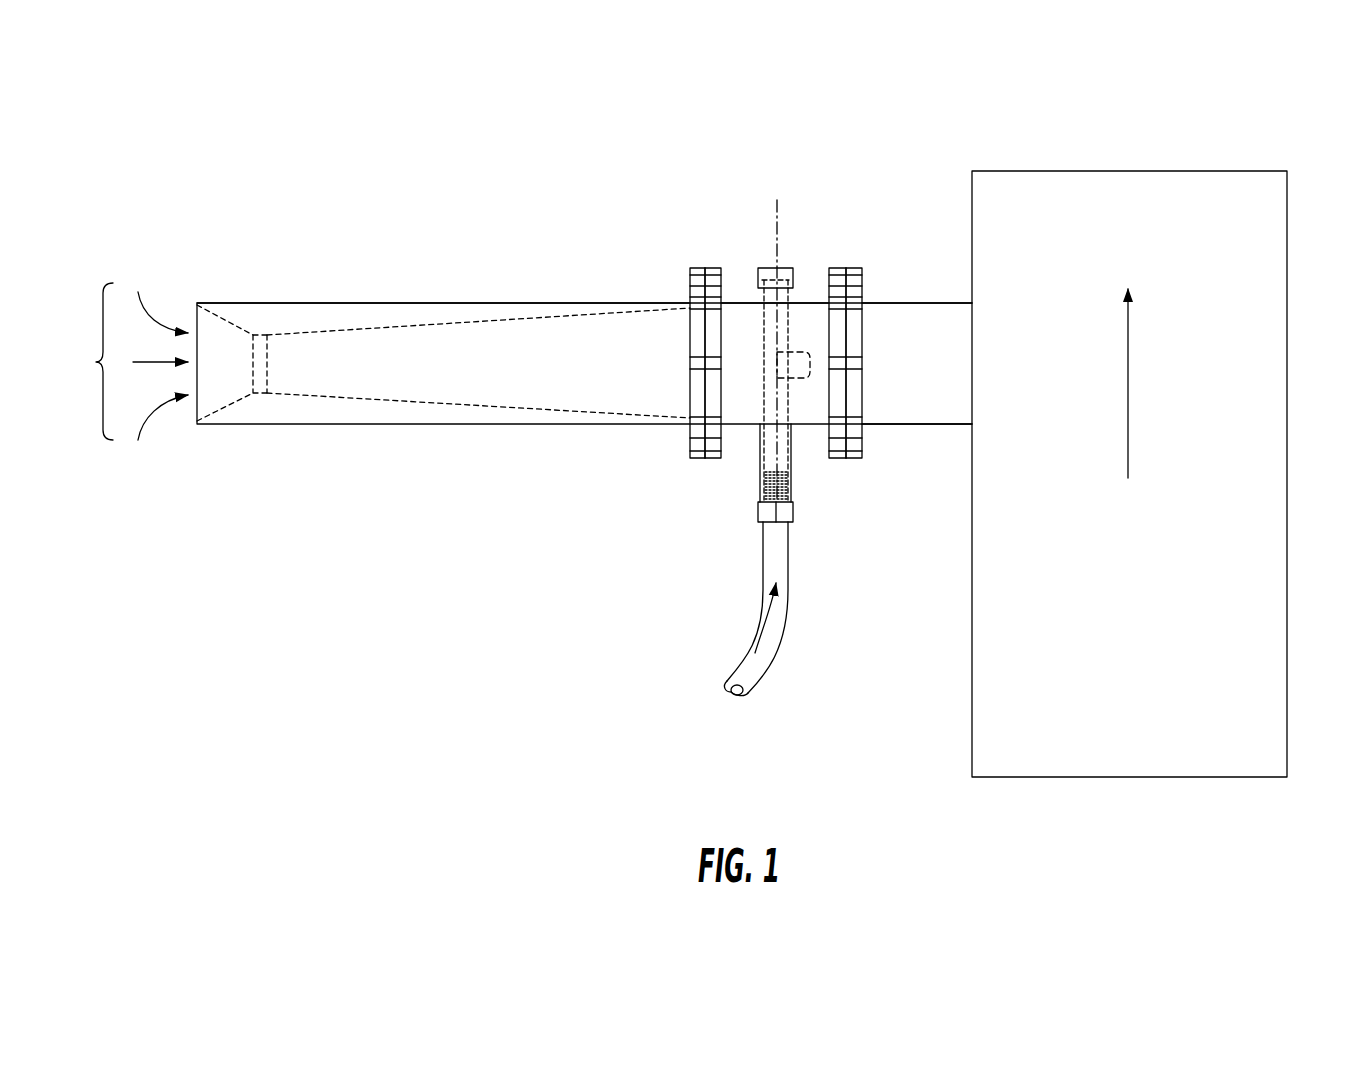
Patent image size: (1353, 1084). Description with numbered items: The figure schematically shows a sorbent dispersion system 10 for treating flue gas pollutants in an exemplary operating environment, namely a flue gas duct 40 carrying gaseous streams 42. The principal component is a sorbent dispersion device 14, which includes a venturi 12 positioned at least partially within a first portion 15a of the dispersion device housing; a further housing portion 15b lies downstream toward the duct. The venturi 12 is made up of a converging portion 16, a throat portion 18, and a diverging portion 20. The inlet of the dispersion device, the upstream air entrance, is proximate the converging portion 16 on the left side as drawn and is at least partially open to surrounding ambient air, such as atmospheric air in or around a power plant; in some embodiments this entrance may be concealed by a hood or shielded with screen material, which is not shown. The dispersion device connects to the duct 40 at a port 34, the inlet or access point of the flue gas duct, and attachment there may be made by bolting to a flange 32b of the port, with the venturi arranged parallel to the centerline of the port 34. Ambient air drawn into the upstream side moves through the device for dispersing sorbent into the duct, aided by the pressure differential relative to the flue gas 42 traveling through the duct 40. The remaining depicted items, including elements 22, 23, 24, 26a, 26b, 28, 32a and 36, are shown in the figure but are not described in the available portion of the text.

The sorbent dispersion system 10 is at (443, 193).
The venturi 12 is at (433, 320).
The sorbent dispersion device 14 is at (550, 292).
The first portion of dispersion device housing 15a is at (291, 302).
The housing portion 15b is at (741, 303).
The converging portion 16 is at (227, 410).
The throat portion 18 is at (266, 399).
The diverging portion 20 is at (487, 412).
The reductant supply hose 22 is at (728, 660).
The reductant flow direction 23 is at (760, 618).
The injector fitting 24 is at (756, 509).
The first flange 26a is at (695, 266).
The second flange 26b is at (712, 266).
The injector nozzle 28 is at (799, 351).
The first downstream flange 32a is at (836, 461).
The flange 32b is at (853, 461).
The port 34 is at (903, 303).
The exhaust gas inlet flow 36 is at (126, 361).
The flue gas duct 40 is at (1290, 276).
The gaseous streams 42 is at (1177, 405).